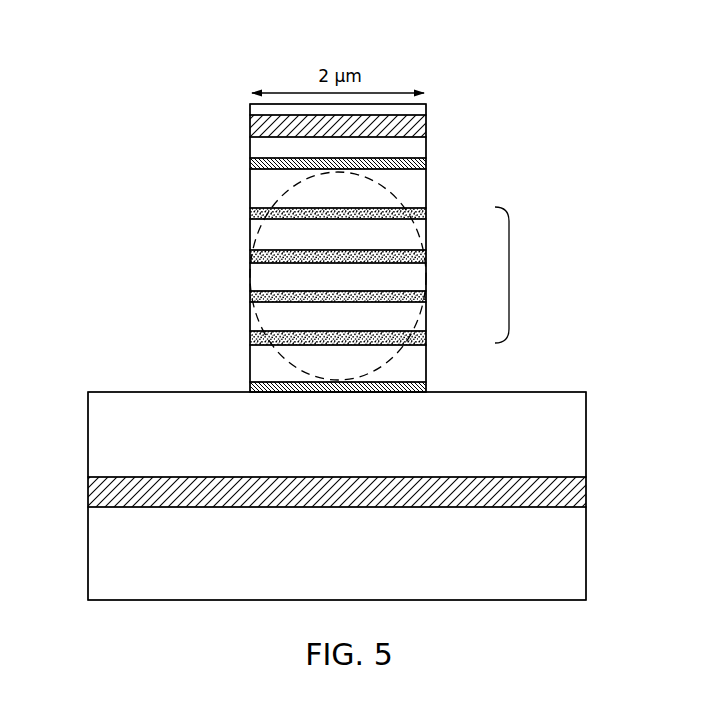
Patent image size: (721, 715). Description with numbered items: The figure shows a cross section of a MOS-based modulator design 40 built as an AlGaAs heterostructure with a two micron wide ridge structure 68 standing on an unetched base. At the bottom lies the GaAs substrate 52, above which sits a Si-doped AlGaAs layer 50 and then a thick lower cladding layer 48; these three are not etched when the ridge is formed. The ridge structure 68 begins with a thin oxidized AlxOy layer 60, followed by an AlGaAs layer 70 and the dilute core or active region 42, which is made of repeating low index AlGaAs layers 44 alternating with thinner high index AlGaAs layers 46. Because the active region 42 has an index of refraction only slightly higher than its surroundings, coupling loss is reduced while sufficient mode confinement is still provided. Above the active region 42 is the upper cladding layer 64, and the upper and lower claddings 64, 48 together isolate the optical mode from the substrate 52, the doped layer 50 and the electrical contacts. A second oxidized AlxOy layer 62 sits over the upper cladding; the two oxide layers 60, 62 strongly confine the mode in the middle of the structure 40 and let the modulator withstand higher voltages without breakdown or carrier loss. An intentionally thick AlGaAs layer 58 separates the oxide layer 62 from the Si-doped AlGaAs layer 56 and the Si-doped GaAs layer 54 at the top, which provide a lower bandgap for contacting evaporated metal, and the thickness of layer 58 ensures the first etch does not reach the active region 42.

The MOS-based modulator design 40 is at (109, 56).
The ridge structure 68 is at (85, 142).
The Si-doped GaAs layer 54 is at (428, 113).
The Si-doped Al0.26Ga0.74As layer 56 is at (250, 127).
The Al0.26Ga0.74As layer 58 is at (250, 156).
The AlxOy oxide layer 62 is at (428, 165).
The upper Al0.26Ga0.74As cladding layer 64 is at (428, 191).
The active region 42 is at (510, 277).
The high index Al0.18Ga0.82As layers 46 is at (428, 214).
The low index Al0.26Ga0.74As layers 44 is at (250, 236).
The Al0.26Ga0.74As layer 70 is at (428, 363).
The AlxOy oxide layer 60 is at (250, 385).
The lower Al0.26Ga0.74As cladding layer 48 is at (88, 436).
The Si-doped Al0.26Ga0.74As layer 50 is at (88, 491).
The GaAs substrate 52 is at (88, 554).